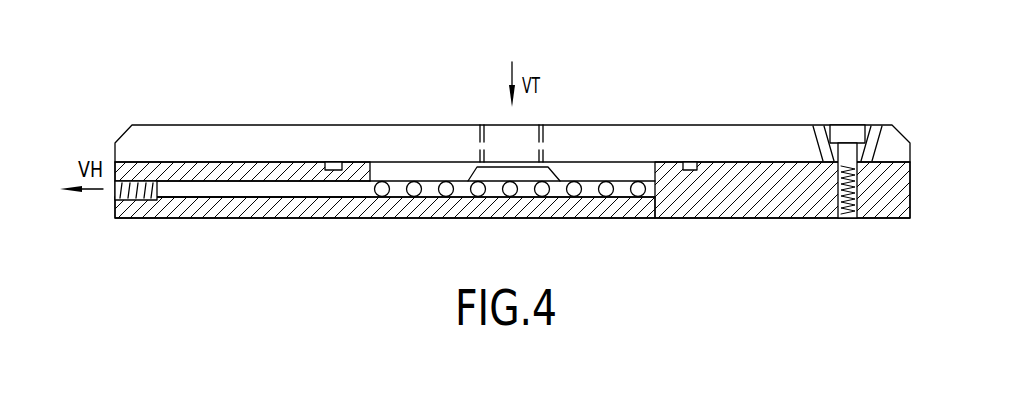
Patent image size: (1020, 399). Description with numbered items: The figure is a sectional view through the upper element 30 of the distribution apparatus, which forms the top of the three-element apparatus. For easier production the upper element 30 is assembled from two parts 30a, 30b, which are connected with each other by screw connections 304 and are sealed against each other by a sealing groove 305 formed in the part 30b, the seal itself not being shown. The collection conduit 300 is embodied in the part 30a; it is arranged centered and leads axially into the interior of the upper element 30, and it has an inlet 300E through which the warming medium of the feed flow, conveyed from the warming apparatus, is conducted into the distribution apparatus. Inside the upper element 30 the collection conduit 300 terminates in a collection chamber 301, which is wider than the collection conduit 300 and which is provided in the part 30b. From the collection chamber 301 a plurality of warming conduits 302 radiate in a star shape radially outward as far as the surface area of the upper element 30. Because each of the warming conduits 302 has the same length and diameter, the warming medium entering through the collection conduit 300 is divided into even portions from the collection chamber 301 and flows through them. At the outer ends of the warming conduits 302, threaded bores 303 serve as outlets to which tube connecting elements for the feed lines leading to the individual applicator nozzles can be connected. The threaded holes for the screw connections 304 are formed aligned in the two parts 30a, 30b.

The upper element 30 is at (648, 106).
The part 30a is at (283, 128).
The part 30b is at (370, 218).
The collection conduit 300 is at (533, 125).
The inlet 300E is at (493, 128).
The collection chamber 301 is at (590, 190).
The warming conduits 302 is at (227, 198).
The threaded bores 303 is at (132, 185).
The screw connections 304 is at (856, 133).
The sealing groove 305 is at (690, 162).